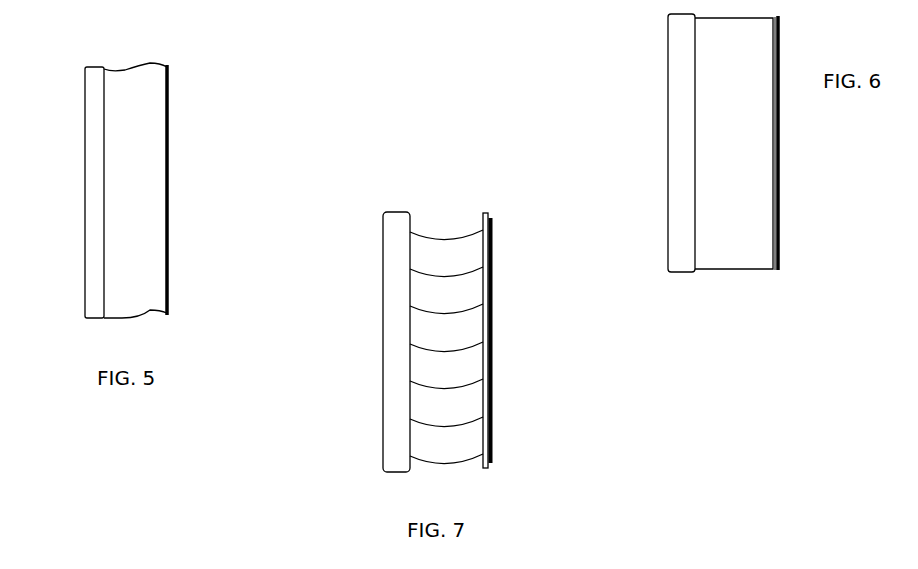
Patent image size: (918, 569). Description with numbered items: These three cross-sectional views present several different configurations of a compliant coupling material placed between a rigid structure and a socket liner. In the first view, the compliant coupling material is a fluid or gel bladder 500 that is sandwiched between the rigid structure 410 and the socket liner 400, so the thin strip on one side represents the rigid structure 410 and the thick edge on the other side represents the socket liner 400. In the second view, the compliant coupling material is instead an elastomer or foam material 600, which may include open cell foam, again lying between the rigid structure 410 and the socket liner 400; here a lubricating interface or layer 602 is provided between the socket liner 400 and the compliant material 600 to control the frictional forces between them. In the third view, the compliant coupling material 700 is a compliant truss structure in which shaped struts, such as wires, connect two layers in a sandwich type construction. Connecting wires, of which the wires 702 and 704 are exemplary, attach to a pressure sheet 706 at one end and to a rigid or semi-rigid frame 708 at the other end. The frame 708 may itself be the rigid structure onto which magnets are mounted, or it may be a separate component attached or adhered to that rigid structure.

In FIG. 5, the socket liner 400 is at (169, 143).
In FIG. 6, the socket liner 400 is at (780, 264).
In FIG. 5, the rigid structure 410 is at (92, 154).
In FIG. 6, the rigid structure 410 is at (682, 128).
In FIG. 5, the fluid or gel bladder 500 is at (148, 218).
In FIG. 6, the elastomer or foam material 600 is at (745, 140).
In FIG. 6, the lubricating interface or layer 602 is at (775, 246).
In FIG. 7, the compliant coupling material 700 is at (400, 339).
In FIG. 7, the connecting wire 702 is at (447, 352).
In FIG. 7, the connecting wire 704 is at (421, 412).
In FIG. 7, the pressure sheet 706 is at (487, 255).
In FIG. 7, the rigid or semi-rigid frame 708 is at (393, 368).